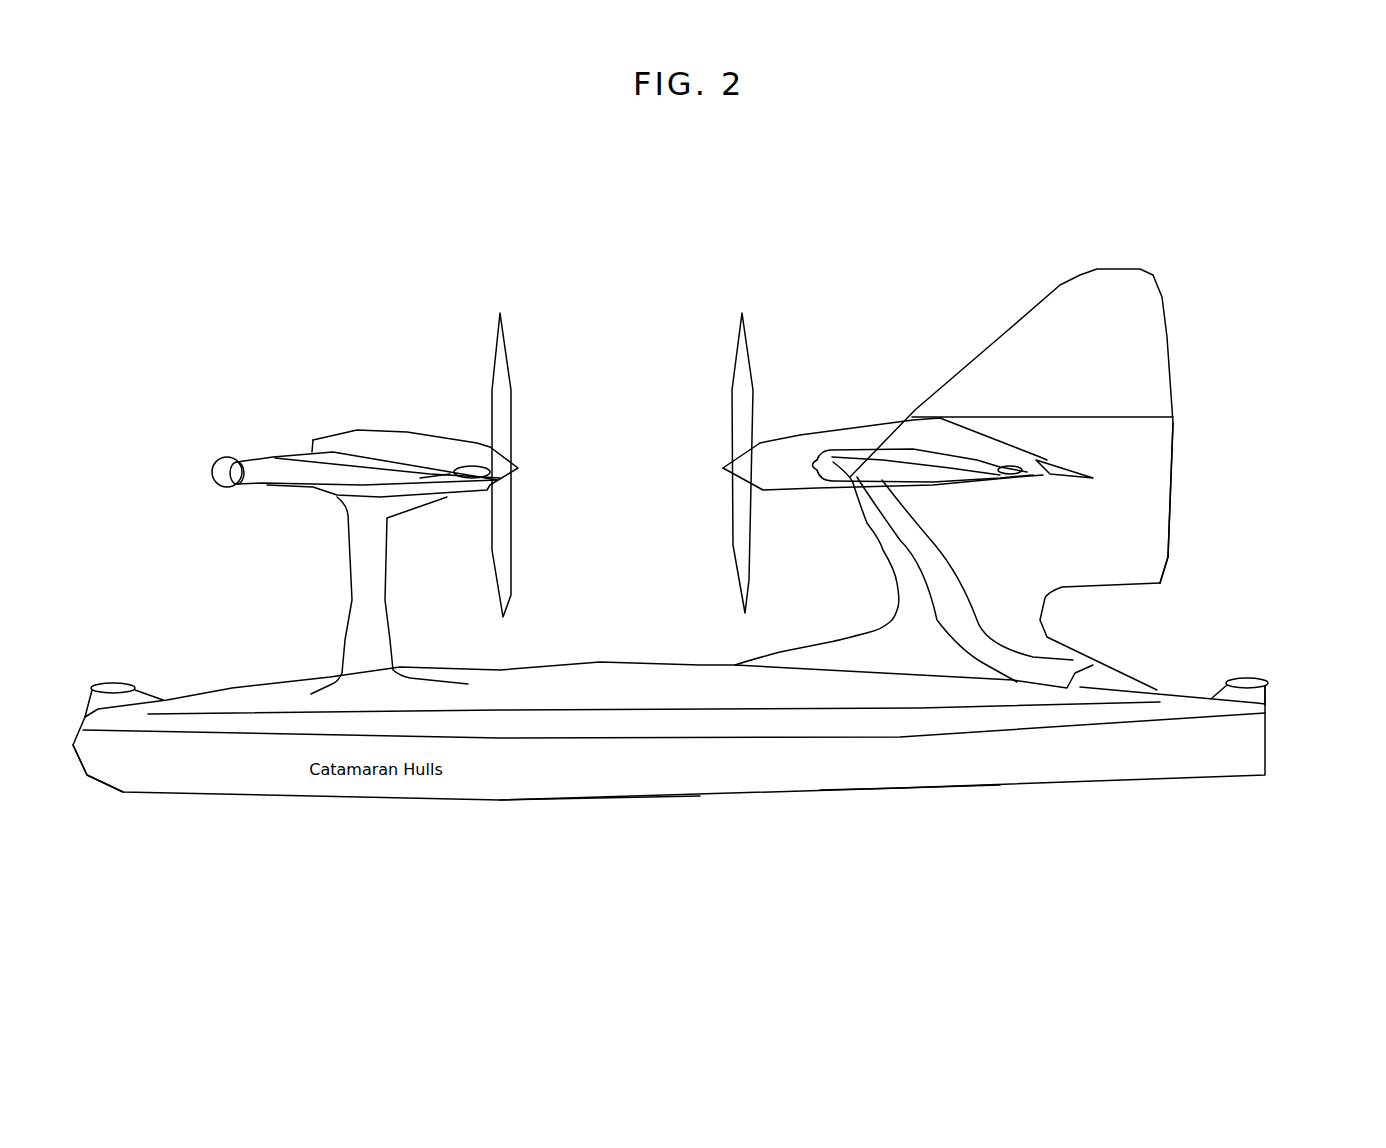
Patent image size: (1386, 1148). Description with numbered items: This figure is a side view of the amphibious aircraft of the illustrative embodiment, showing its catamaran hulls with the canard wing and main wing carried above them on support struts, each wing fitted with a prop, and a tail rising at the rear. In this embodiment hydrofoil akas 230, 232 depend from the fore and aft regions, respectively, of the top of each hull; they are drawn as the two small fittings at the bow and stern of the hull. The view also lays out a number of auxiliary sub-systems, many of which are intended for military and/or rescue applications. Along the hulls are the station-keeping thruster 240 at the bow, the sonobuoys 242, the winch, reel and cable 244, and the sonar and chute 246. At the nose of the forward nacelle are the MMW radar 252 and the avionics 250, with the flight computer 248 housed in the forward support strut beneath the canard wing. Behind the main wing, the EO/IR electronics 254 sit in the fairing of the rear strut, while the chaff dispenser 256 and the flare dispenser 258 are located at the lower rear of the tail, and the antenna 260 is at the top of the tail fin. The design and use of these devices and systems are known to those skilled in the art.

The hydrofoil aka 230 is at (87, 698).
The hydrofoil aka 232 is at (1268, 698).
The station-keeping thruster 240 is at (105, 790).
The sonobuoys 242 is at (668, 779).
The winch, reel and cable 244 is at (884, 752).
The sonar and chute 246 is at (902, 779).
The flight computer 248 is at (309, 503).
The avionics 250 is at (251, 489).
The MMW radar 252 is at (225, 452).
The EO/IR electronics 254 is at (873, 646).
The chaff dispenser 256 is at (1028, 578).
The flare dispenser 258 is at (1151, 570).
The antenna 260 is at (1137, 280).